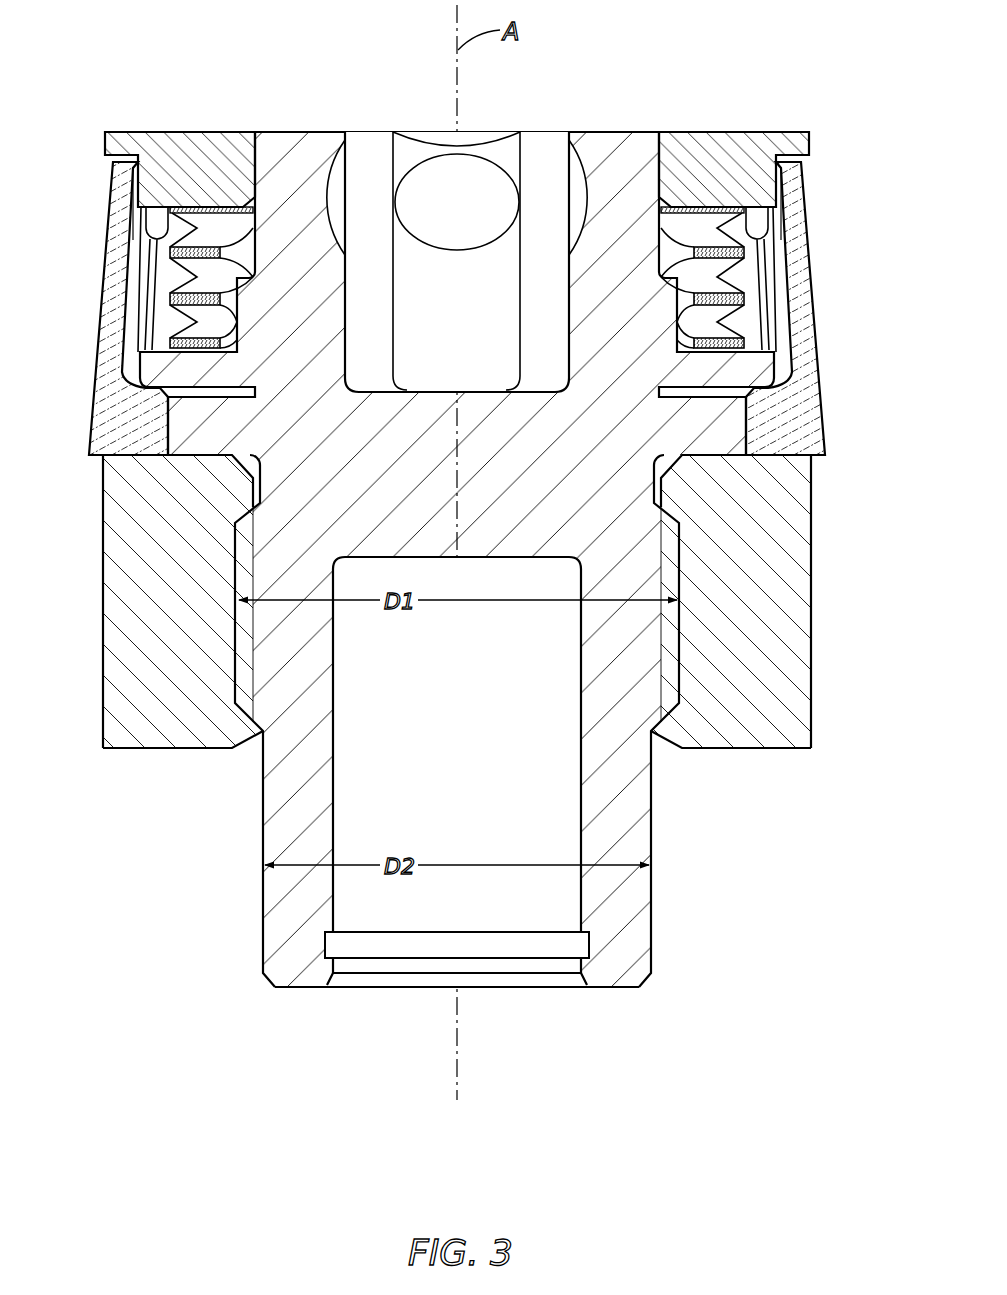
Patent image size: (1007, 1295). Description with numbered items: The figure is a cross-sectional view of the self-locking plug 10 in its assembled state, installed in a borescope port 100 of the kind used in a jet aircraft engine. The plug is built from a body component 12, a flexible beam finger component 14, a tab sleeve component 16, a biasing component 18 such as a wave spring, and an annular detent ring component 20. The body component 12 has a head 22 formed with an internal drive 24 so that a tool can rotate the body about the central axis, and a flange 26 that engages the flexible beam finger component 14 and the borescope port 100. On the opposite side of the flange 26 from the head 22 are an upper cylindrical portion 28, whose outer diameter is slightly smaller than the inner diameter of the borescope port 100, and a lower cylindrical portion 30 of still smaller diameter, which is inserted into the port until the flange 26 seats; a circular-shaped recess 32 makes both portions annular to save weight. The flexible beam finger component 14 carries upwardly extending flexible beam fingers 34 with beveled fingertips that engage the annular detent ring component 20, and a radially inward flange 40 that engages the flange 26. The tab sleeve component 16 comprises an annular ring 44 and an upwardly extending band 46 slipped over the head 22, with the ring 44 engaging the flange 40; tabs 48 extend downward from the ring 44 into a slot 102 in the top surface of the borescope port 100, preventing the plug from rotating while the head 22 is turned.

The self-locking plug 10 is at (86, 54).
The body component 12 is at (684, 616).
The flexible beam finger component 14 is at (826, 357).
The tab sleeve component 16 is at (780, 350).
The biasing component 18 is at (750, 368).
The annular detent ring component 20 is at (769, 121).
The head 22 is at (660, 172).
The internal drive 24 is at (565, 178).
The flange 26 is at (760, 423).
The upper cylindrical portion 28 is at (680, 653).
The lower cylindrical portion 30 is at (652, 920).
The circular-shaped recess 32 is at (582, 770).
The flexible beam fingers 34 is at (810, 203).
The flange 40 is at (663, 393).
The annular ring 44 is at (752, 298).
The upwardly extending band 46 is at (662, 312).
The tabs 48 is at (780, 500).
The borescope port 100 is at (816, 655).
The slot 102 is at (118, 520).